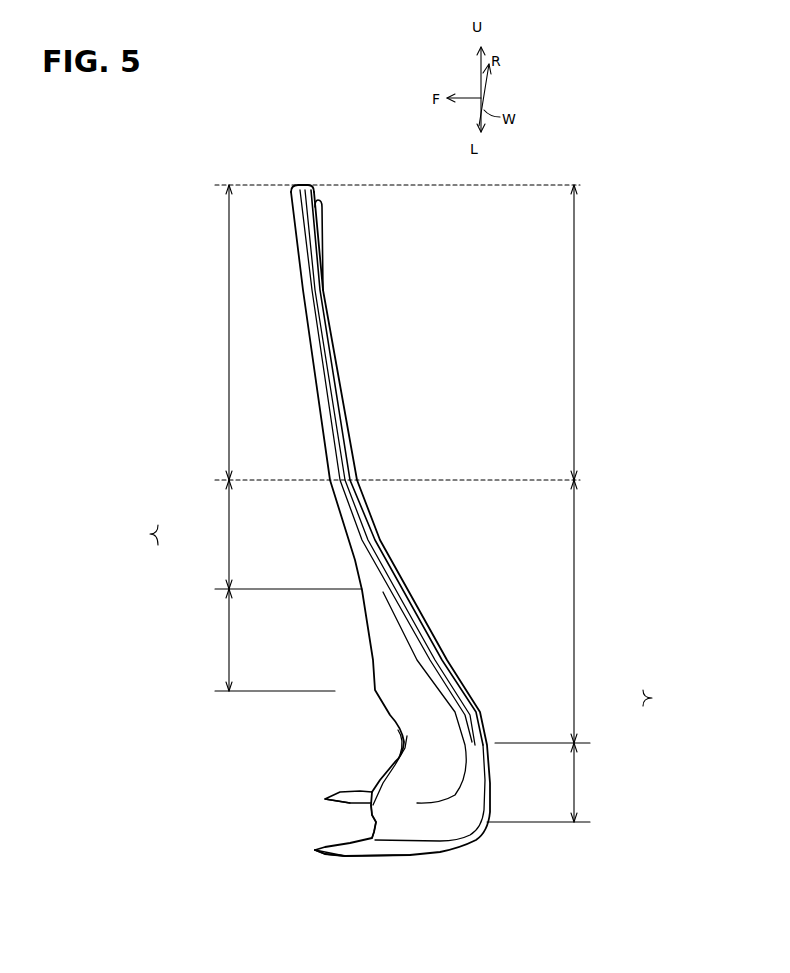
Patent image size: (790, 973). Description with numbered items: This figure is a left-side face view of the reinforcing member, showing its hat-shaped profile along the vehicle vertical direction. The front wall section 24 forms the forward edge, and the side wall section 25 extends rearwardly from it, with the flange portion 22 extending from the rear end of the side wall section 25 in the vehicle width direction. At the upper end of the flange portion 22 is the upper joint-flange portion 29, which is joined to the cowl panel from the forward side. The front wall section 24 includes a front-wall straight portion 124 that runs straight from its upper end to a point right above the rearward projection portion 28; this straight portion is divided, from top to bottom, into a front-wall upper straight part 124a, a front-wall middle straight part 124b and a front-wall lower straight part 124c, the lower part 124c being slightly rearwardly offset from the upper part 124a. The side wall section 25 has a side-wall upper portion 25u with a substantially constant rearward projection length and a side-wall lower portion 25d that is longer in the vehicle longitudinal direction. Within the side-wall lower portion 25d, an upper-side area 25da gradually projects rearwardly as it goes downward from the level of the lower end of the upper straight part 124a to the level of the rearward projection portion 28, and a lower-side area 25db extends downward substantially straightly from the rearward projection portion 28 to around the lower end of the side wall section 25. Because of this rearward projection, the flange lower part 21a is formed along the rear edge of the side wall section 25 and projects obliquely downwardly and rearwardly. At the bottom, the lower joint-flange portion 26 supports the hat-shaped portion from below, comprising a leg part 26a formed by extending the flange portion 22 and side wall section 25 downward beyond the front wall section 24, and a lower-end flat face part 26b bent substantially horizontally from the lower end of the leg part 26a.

The flange lower part 21a is at (478, 722).
The flange portion 22 is at (326, 320).
The front wall section 24 is at (390, 778).
The side wall section 25 is at (392, 655).
The side-wall upper portion 25u is at (596, 332).
The side-wall lower portion 25d is at (655, 698).
The upper-side area of side-wall lower portion 25da is at (643, 690).
The lower-side area of side-wall lower portion 25db is at (643, 706).
The lower joint-flange portion 26 is at (325, 799).
The leg part 26a is at (367, 832).
The lower-end flat face part 26b is at (340, 792).
The rearward projection portion 28 is at (397, 738).
The upper joint-flange portion 29 is at (313, 190).
The front-wall straight portion 124 is at (150, 534).
The front-wall upper straight part 124a is at (158, 525).
The front-wall middle straight part 124b is at (165, 534).
The front-wall lower straight part 124c is at (158, 545).